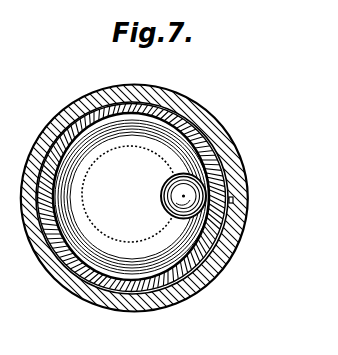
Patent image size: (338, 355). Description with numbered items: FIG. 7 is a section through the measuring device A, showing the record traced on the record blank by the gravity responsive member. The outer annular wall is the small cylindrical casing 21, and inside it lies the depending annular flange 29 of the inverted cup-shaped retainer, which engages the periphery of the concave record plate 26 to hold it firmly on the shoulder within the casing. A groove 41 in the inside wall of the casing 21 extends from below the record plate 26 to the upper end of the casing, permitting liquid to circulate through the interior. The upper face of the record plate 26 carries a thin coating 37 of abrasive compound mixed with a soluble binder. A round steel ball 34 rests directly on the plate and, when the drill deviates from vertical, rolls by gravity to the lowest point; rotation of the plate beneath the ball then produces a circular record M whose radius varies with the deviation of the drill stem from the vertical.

The casing 21 is at (218, 255).
The annular flange 29 is at (207, 221).
The record plate 26 is at (130, 263).
The coating 37 is at (130, 194).
The ball 34 is at (188, 197).
The groove 41 is at (233, 200).
The record M is at (172, 153).
The measuring device A is at (42, 255).